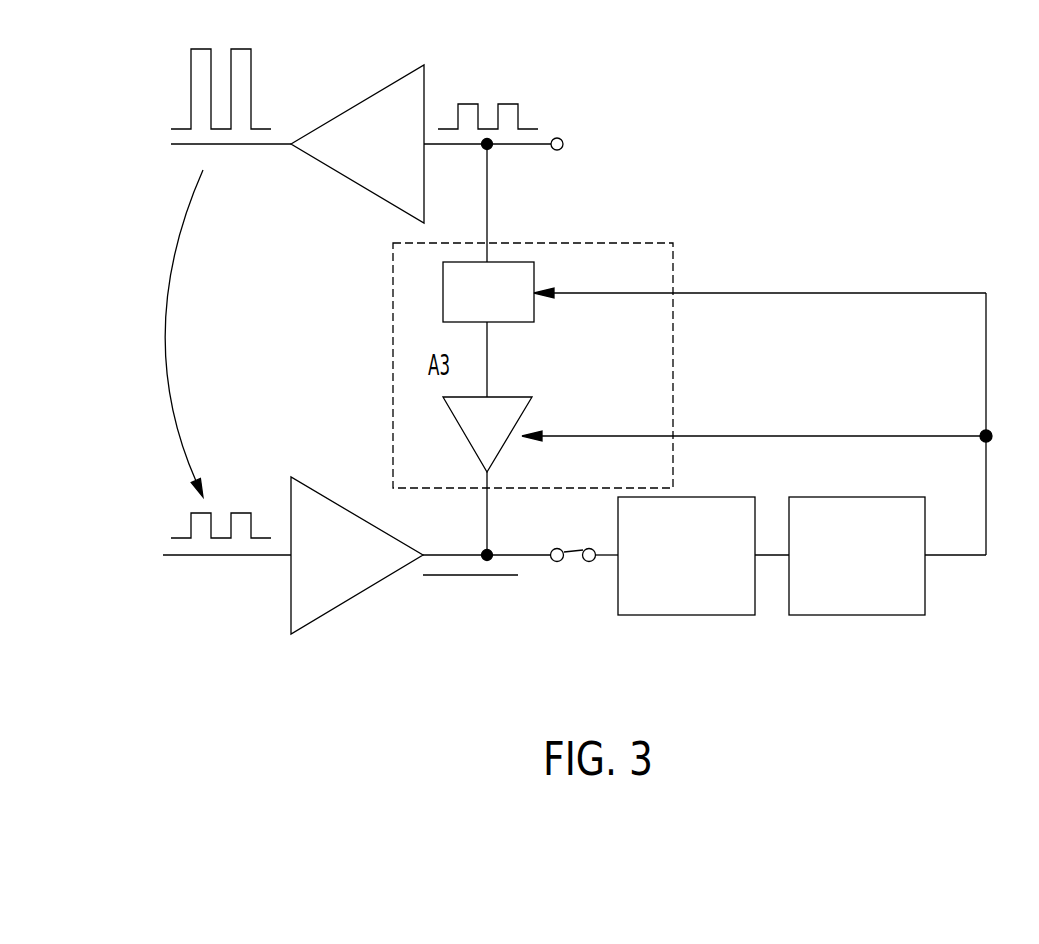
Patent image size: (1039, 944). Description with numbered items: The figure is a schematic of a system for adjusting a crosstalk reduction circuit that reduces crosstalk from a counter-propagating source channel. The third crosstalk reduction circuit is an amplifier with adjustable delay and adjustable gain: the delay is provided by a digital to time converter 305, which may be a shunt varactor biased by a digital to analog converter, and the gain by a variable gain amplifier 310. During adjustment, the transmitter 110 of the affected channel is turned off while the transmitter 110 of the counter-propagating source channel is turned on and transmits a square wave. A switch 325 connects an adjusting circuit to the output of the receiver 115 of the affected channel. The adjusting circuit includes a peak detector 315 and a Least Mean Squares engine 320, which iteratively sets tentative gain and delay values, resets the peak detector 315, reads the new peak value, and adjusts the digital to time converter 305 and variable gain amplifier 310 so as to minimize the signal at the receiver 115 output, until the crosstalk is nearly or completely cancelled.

The transmitter 110 is at (340, 113).
The receiver 115 is at (327, 493).
The digital to time converter 305 is at (534, 317).
The variable gain amplifier 310 is at (530, 410).
The peak detector 315 is at (690, 615).
The Least Mean Squares engine 320 is at (865, 615).
The switch 325 is at (577, 565).